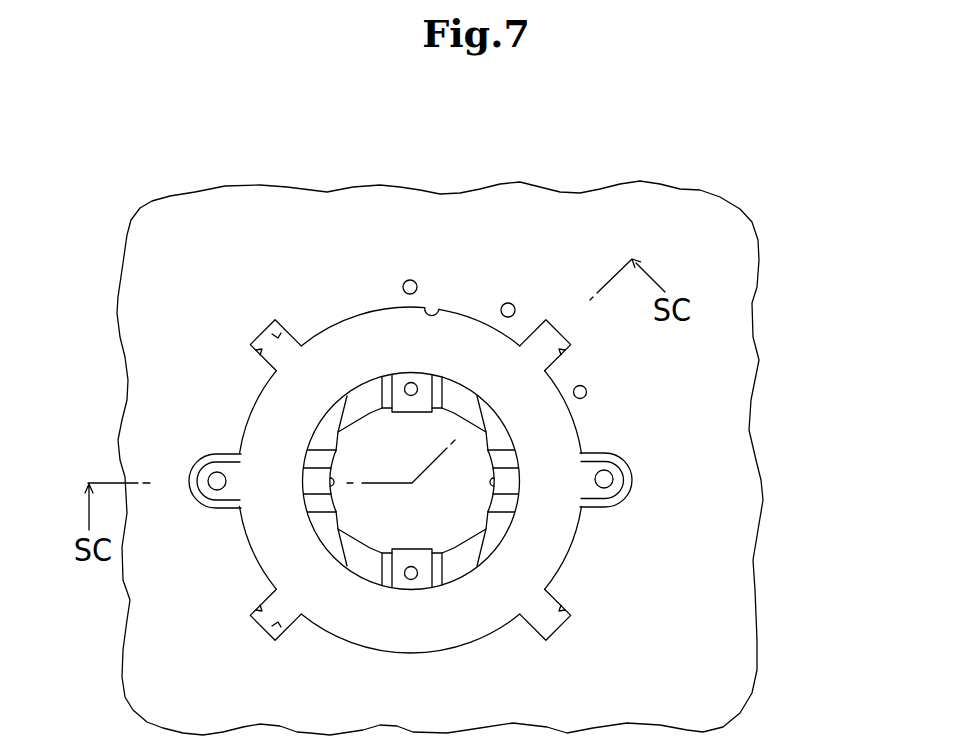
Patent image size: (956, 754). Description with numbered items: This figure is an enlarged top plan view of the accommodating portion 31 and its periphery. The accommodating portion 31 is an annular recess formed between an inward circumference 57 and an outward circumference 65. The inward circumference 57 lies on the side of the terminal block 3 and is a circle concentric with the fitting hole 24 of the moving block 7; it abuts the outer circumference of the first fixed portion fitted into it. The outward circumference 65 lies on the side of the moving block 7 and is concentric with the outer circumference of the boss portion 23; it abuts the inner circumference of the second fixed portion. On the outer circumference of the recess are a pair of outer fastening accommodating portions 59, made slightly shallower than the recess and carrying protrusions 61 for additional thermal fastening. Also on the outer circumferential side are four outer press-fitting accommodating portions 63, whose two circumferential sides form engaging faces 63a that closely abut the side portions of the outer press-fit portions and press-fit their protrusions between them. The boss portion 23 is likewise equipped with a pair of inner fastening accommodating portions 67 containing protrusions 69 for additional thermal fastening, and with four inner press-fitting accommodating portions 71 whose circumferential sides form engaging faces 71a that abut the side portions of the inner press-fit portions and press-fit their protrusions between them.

The terminal block 3 is at (742, 352).
The moving block 7 is at (526, 456).
The boss portion 23 is at (505, 432).
The fitting hole 24 is at (513, 465).
The accommodating portion 31 is at (350, 336).
The inward circumference 57 is at (436, 311).
The outer fastening accommodating portion 59 is at (210, 457).
The protrusion 61 is at (221, 463).
The outer press-fitting accommodating portion 63 is at (250, 344).
The engaging face 63a is at (277, 337).
The outward circumference 65 is at (517, 523).
The inner fastening accommodating portion 67 is at (392, 376).
The protrusion 69 is at (417, 375).
The inner press-fitting accommodating portion 71 is at (340, 404).
The engaging face 71a is at (487, 550).